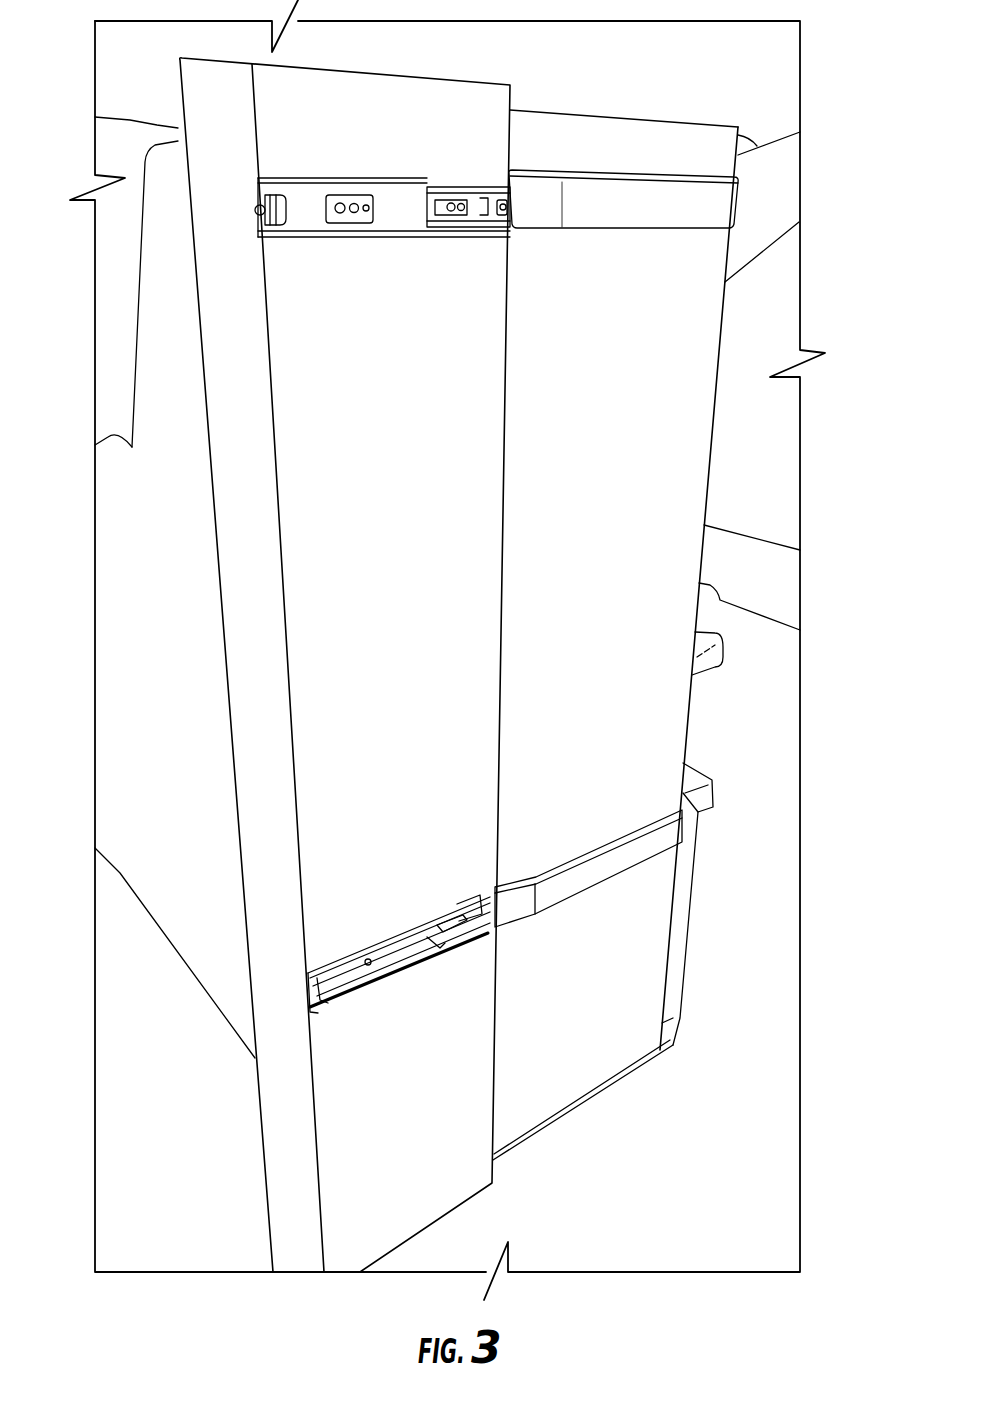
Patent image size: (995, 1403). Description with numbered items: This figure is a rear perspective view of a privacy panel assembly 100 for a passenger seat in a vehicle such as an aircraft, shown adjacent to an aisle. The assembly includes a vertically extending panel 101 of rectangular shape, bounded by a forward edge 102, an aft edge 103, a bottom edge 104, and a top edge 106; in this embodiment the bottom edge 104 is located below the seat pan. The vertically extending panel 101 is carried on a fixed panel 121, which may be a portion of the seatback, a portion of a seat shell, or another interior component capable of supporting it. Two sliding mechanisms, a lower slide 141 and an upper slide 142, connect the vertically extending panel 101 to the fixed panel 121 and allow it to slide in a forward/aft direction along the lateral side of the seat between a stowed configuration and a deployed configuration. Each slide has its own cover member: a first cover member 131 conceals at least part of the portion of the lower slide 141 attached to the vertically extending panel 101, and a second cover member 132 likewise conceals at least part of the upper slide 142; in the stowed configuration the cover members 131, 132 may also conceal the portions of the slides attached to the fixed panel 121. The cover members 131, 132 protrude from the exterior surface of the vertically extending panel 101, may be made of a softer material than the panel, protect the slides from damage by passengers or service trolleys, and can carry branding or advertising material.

The privacy panel assembly 100 is at (703, 1222).
The vertically extending panel 101 is at (635, 413).
The forward edge 102 is at (722, 330).
The aft edge 103 is at (510, 128).
The bottom edge 104 is at (628, 1082).
The top edge 106 is at (705, 122).
The fixed panel 121 is at (384, 554).
The first cover member 131 is at (600, 868).
The second cover member 132 is at (635, 197).
The lower slide 141 is at (412, 947).
The upper slide 142 is at (390, 197).